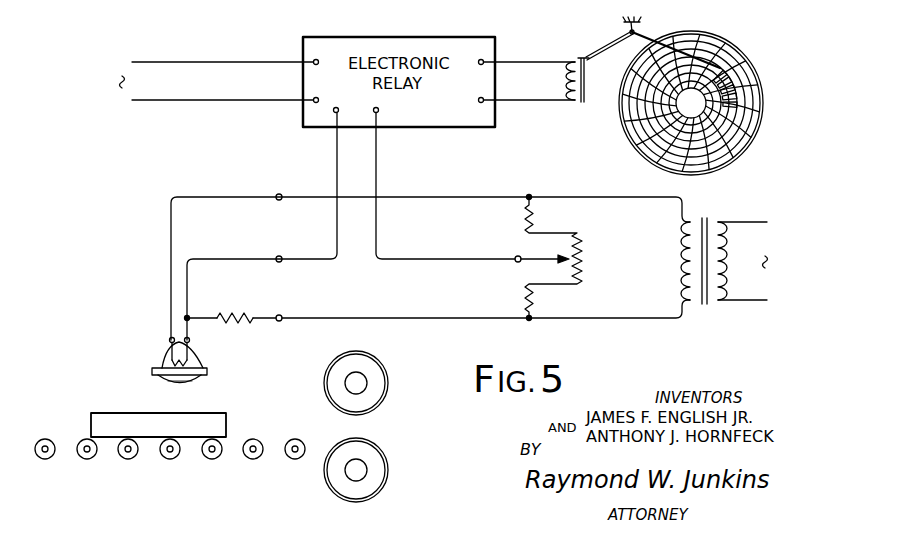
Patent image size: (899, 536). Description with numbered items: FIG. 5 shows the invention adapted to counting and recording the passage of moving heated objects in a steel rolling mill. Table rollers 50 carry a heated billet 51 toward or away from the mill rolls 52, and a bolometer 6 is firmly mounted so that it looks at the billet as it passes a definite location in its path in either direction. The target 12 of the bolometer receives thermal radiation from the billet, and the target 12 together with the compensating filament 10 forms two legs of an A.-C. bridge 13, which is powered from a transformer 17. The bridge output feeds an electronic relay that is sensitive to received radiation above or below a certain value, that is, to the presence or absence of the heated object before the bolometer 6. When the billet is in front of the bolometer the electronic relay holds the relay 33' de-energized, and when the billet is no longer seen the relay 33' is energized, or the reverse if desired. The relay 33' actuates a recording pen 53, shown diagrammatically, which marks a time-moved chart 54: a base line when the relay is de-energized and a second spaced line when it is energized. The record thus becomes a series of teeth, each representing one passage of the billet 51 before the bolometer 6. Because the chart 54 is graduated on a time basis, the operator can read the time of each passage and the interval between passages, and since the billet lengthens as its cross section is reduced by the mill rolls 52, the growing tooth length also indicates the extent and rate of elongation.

The bolometer 6 is at (202, 364).
The compensating filament 10 is at (222, 314).
The target 12 is at (161, 364).
The A.-C. bridge 13 is at (432, 303).
The transformer 17 is at (714, 325).
The relay 33' is at (588, 80).
The table rollers 50 is at (178, 460).
The heated billet 51 is at (91, 413).
The mill rolls 52 is at (377, 446).
The recording pen 53 is at (640, 32).
The chart 54 is at (722, 37).